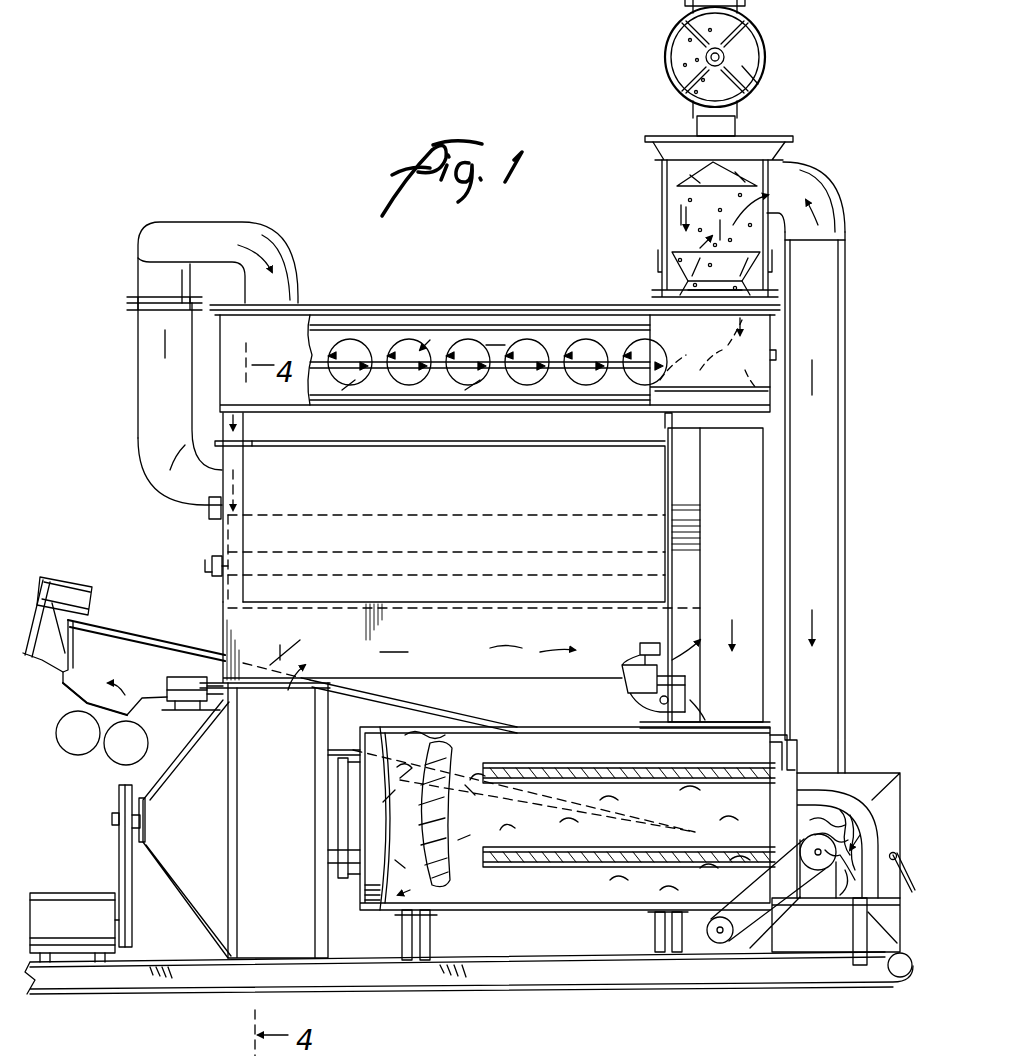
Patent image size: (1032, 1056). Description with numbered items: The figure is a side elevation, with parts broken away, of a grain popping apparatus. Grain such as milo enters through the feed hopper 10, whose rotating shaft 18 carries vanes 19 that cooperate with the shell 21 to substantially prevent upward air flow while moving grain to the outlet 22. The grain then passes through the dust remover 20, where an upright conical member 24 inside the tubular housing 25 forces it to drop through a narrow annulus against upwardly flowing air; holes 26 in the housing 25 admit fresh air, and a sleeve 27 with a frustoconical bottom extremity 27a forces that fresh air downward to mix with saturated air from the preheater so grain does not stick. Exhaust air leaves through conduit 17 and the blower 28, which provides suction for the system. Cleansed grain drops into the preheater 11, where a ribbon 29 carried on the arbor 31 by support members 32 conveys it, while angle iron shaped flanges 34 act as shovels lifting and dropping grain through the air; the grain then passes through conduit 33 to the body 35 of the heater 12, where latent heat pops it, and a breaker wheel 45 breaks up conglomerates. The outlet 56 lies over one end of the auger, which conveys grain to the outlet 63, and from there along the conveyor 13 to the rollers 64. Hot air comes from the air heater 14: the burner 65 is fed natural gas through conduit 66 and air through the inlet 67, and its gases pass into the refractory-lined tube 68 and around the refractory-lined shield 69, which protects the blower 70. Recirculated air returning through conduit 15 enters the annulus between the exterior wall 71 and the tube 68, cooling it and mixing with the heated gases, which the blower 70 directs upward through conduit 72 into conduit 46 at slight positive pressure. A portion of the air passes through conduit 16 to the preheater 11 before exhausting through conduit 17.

The feed hopper 10 is at (662, 73).
The preheater 11 is at (446, 308).
The heater 12 is at (218, 592).
The conveyor 13 is at (115, 625).
The air heater 14 is at (100, 758).
The conduit 15 is at (716, 535).
The conduit 16 is at (139, 386).
The conduit 17 is at (826, 506).
The rotating shaft 18 is at (726, 55).
The vanes 19 is at (760, 76).
The dust remover 20 is at (660, 225).
The shell 21 is at (667, 50).
The outlet 22 is at (742, 126).
The upright conical member 24 is at (788, 165).
The tubular housing 25 is at (672, 180).
The holes 26 is at (735, 312).
The sleeve 27 is at (700, 243).
The bottom extremity of sleeve 27a is at (690, 290).
The blower 28 is at (830, 932).
The ribbon 29 is at (470, 338).
The arbor 31 is at (378, 385).
The support members 32 is at (438, 404).
The conduit 33 is at (244, 420).
The angle iron shaped flanges 34 is at (505, 400).
The body 35 is at (605, 482).
The breaker wheel 45 is at (650, 680).
The conduit 46 is at (470, 647).
The outlet 56 is at (690, 708).
The outlet 63 is at (82, 706).
The rollers 64 is at (78, 733).
The burner 65 is at (858, 790).
The conduit 66 is at (862, 972).
The inlet 67 is at (893, 893).
The refractory-lined tube 68 is at (648, 868).
The refractory-lined shield 69 is at (460, 872).
The blower 70 is at (192, 915).
The exterior wall 71 is at (552, 912).
The conduit 72 is at (300, 690).